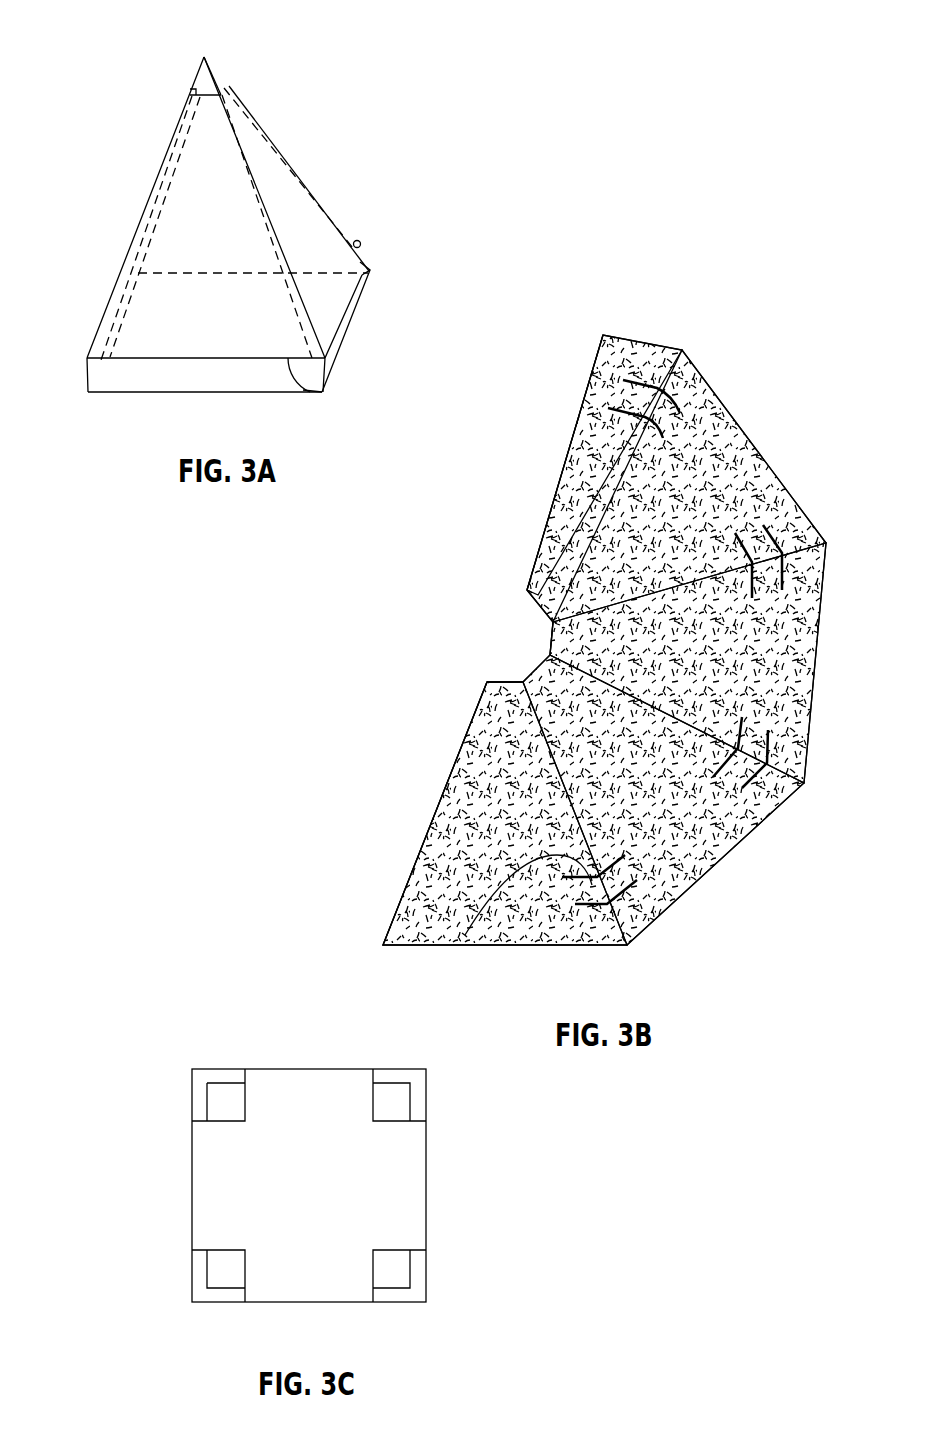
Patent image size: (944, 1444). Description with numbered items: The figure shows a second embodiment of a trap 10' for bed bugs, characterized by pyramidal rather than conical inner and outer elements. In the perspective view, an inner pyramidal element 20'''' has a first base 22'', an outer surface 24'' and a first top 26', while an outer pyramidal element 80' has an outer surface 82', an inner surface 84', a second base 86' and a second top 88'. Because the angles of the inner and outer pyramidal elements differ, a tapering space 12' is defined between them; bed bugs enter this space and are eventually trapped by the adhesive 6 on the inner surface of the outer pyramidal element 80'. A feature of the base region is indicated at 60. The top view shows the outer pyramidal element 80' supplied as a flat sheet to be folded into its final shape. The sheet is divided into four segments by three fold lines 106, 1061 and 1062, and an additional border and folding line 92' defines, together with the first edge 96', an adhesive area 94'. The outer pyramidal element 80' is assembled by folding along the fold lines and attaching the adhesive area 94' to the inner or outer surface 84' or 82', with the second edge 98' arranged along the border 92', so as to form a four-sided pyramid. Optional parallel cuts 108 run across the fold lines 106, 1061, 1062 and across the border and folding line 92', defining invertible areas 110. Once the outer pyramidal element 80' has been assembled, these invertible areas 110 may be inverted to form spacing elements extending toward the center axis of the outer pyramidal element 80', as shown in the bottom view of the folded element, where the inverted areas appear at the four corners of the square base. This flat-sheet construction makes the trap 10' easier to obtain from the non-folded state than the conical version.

In FIG. 3A, the trap 10' is at (194, 224).
In FIG. 3A, the first top 26' is at (177, 68).
In FIG. 3A, the second top 88' is at (227, 59).
In FIG. 3B, the second top 88' is at (517, 622).
In FIG. 3A, the outer pyramidal element 80' is at (299, 178).
In FIG. 3B, the outer pyramidal element 80' is at (505, 813).
In FIG. 3C, the outer pyramidal element 80' is at (299, 1168).
In FIG. 3A, the outer surface 82' is at (317, 168).
In FIG. 3A, the inner surface 84' is at (402, 232).
In FIG. 3A, the first base 22'' is at (289, 327).
In FIG. 3A, the inner pyramidal element 20'''' is at (379, 333).
In FIG. 3A, the curved edge 60 is at (325, 378).
In FIG. 3A, the second base 86' is at (336, 402).
In FIG. 3A, the tapering space 12' is at (111, 239).
In FIG. 3A, the outer surface 24'' is at (168, 254).
In FIG. 3B, the additional border and folding line 92' is at (689, 486).
In FIG. 3B, the adhesive area 94' is at (592, 465).
In FIG. 3C, the adhesive area 94' is at (197, 1204).
In FIG. 3B, the first edge 96' is at (542, 462).
In FIG. 3B, the fold line 1062 is at (824, 550).
In FIG. 3B, the fold line 1061 is at (792, 778).
In FIG. 3B, the fold line 106 is at (620, 935).
In FIG. 3B, the adhesive 6 is at (483, 715).
In FIG. 3B, the second edge 98' is at (413, 813).
In FIG. 3C, the second edge 98' is at (325, 1294).
In FIG. 3B, the parallel cuts 108 is at (465, 935).
In FIG. 3B, the invertible areas 110 is at (575, 888).
In FIG. 3C, the invertible areas 110 is at (395, 1123).